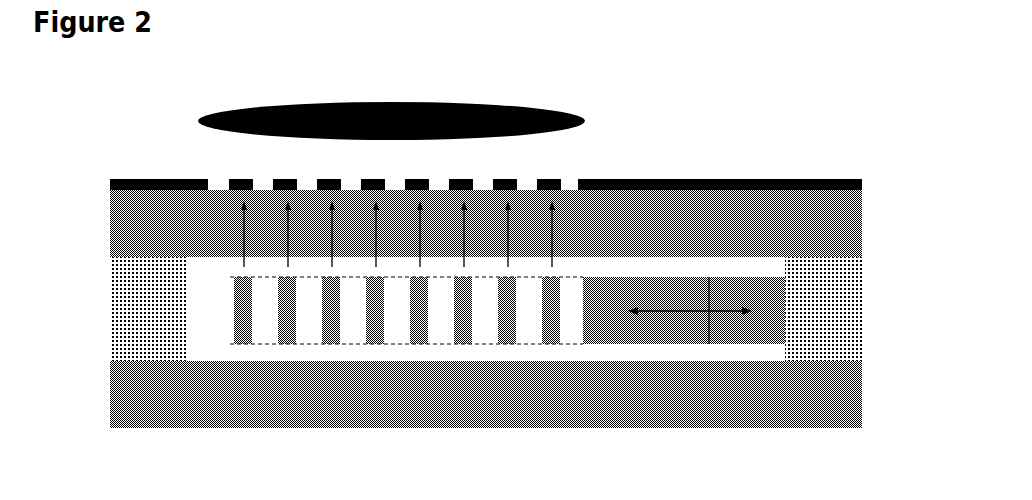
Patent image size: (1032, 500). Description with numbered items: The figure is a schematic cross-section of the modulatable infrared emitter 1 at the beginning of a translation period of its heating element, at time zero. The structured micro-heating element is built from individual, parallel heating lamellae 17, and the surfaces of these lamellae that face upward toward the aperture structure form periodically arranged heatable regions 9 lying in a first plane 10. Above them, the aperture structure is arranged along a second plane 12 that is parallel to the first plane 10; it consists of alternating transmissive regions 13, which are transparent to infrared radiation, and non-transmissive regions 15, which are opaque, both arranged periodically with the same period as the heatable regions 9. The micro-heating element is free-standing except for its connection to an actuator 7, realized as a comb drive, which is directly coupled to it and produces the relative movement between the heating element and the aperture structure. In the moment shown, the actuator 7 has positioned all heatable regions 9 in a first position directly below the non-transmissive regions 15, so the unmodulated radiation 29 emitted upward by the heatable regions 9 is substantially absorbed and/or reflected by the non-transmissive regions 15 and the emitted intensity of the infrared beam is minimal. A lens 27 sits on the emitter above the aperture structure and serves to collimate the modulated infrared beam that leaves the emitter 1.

The modulatable infrared emitter 1 is at (797, 170).
The actuator 7 is at (762, 313).
The heatable regions 9 is at (288, 277).
The first plane 10 is at (673, 278).
The second plane 12 is at (610, 178).
The transmissive regions 13 is at (222, 182).
The non-transmissive regions 15 is at (510, 178).
The heating lamellae 17 is at (463, 344).
The lens 27 is at (453, 100).
The unmodulated radiation 29 is at (243, 240).